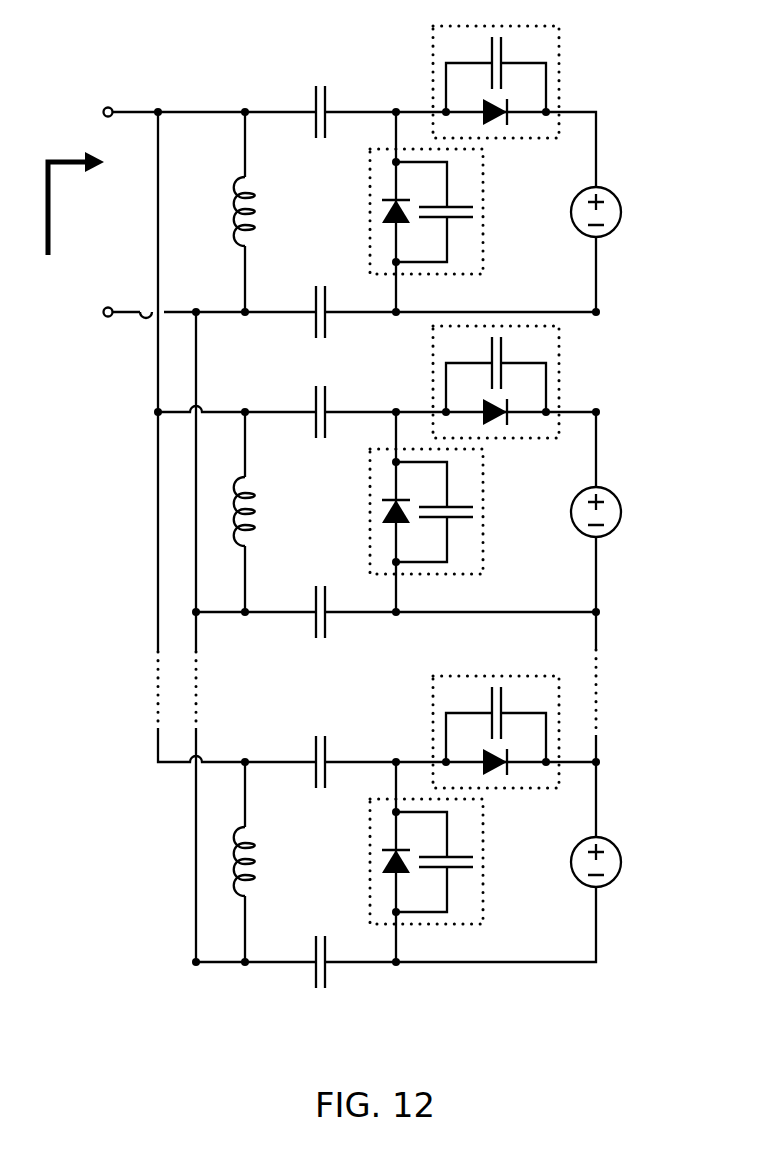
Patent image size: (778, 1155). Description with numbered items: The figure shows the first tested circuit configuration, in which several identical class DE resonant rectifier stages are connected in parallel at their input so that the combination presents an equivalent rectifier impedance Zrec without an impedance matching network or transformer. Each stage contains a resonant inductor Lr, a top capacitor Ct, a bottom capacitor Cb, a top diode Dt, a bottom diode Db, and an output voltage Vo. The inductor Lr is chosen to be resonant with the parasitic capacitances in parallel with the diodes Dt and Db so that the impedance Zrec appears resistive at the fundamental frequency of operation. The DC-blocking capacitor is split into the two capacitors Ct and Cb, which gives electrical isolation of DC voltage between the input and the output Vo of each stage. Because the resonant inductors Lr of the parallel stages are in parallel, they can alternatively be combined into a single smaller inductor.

The equivalent rectifier impedance Zrec is at (81, 203).
The capacitor Ct is at (321, 456).
The capacitor Cb is at (323, 620).
The resonant inductor Lr is at (262, 536).
The diode Dt is at (496, 407).
The diode Db is at (426, 536).
The output voltage Vo is at (617, 537).